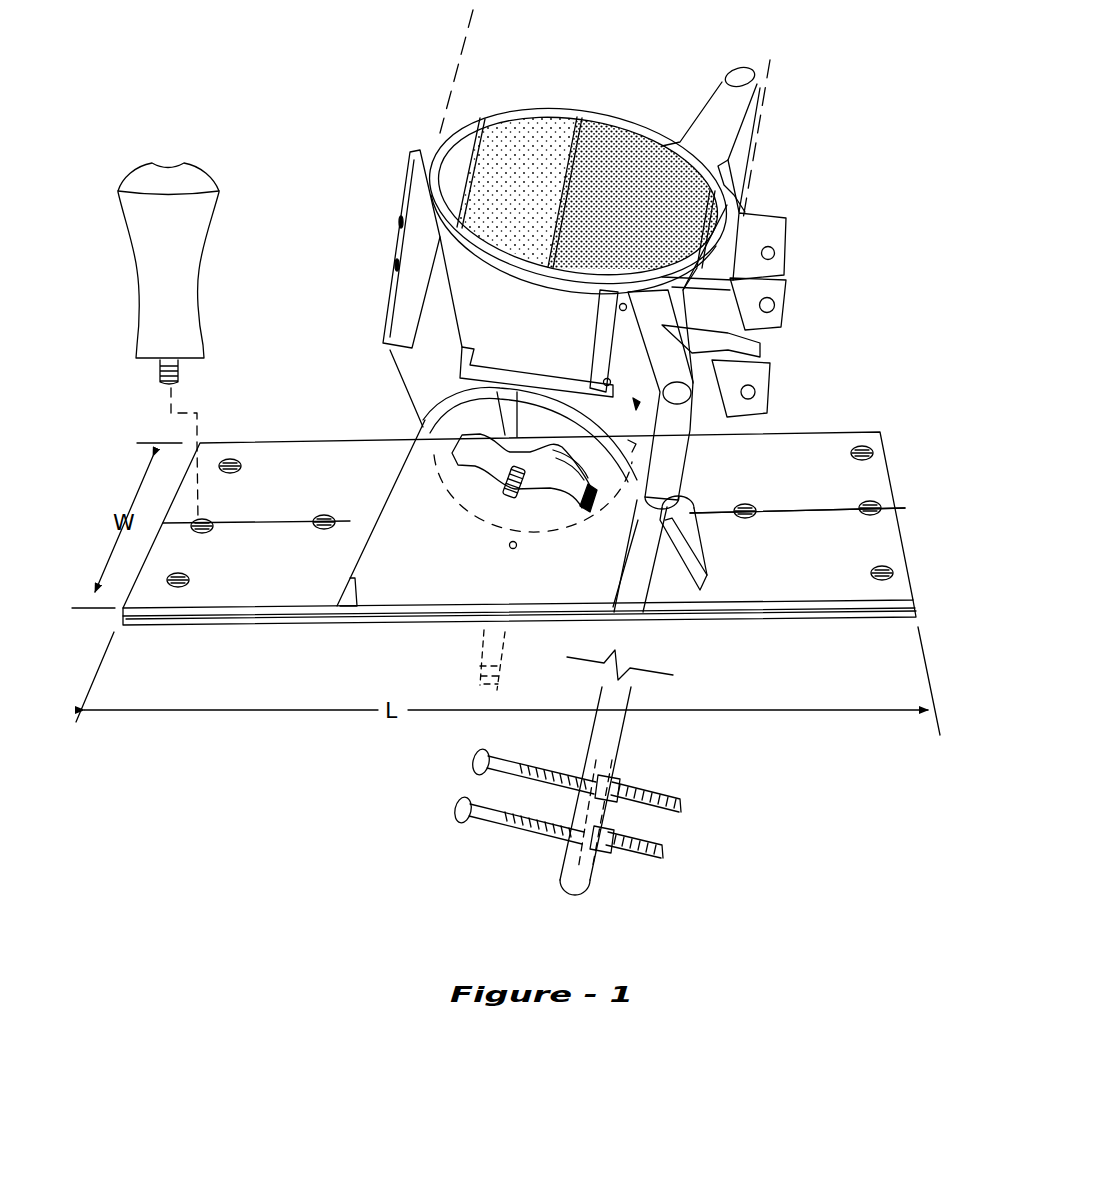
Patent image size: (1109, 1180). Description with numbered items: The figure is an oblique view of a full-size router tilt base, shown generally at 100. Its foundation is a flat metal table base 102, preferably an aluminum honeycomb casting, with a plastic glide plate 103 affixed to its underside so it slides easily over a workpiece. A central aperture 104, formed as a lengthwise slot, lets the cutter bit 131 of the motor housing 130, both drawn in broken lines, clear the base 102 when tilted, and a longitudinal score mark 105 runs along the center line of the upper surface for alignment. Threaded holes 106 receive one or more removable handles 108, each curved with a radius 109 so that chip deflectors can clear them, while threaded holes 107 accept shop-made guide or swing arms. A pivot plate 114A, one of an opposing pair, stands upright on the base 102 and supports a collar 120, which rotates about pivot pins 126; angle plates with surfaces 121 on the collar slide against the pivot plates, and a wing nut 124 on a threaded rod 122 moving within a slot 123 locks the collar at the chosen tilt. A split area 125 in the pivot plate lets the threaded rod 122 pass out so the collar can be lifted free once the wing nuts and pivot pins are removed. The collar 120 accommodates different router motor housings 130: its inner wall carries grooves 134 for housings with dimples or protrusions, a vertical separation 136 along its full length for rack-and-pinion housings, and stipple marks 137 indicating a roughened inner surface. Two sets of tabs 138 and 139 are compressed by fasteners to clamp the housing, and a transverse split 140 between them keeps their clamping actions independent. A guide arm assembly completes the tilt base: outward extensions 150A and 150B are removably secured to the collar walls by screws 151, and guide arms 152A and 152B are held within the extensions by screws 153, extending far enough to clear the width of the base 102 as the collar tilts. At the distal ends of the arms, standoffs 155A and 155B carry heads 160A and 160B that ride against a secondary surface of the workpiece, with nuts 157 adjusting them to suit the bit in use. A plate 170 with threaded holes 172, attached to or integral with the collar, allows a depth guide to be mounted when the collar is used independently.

The router tilt base 100 is at (166, 832).
The table base 102 is at (519, 528).
The glide plate 103 is at (785, 620).
The central aperture 104 is at (682, 520).
The longitudinal score mark 105 is at (818, 506).
The threaded holes 106 is at (875, 506).
The threaded holes 107 is at (758, 513).
The handle 108 is at (183, 308).
The radius 109 is at (140, 281).
The pivot plate 114A is at (355, 582).
The collar 120 is at (645, 125).
The angle plate surfaces 121 is at (467, 380).
The threaded rod 122 is at (508, 495).
The slot 123 is at (586, 510).
The wing nut 124 is at (473, 447).
The split area 125 is at (513, 433).
The pivot pins 126 is at (509, 546).
The motor housing 130 is at (765, 108).
The bit 131 is at (470, 648).
The grooves 134 is at (576, 115).
The vertical separation 136 is at (745, 235).
The stipple marks 137 is at (607, 143).
The tabs 138 is at (776, 304).
The tabs 139 is at (764, 365).
The transverse split 140 is at (597, 340).
The outward extension 150A is at (634, 346).
The outward extension 150B is at (725, 118).
The screws 151 is at (598, 380).
The guide arm 152A is at (648, 575).
The guide arm 152B is at (752, 70).
The screws 153 is at (633, 450).
The standoff 155A is at (668, 854).
The standoff 155B is at (685, 808).
The nuts 157 is at (607, 855).
The head 160A is at (455, 808).
The head 160B is at (470, 762).
The plate 170 is at (395, 250).
The threaded holes 172 is at (394, 264).